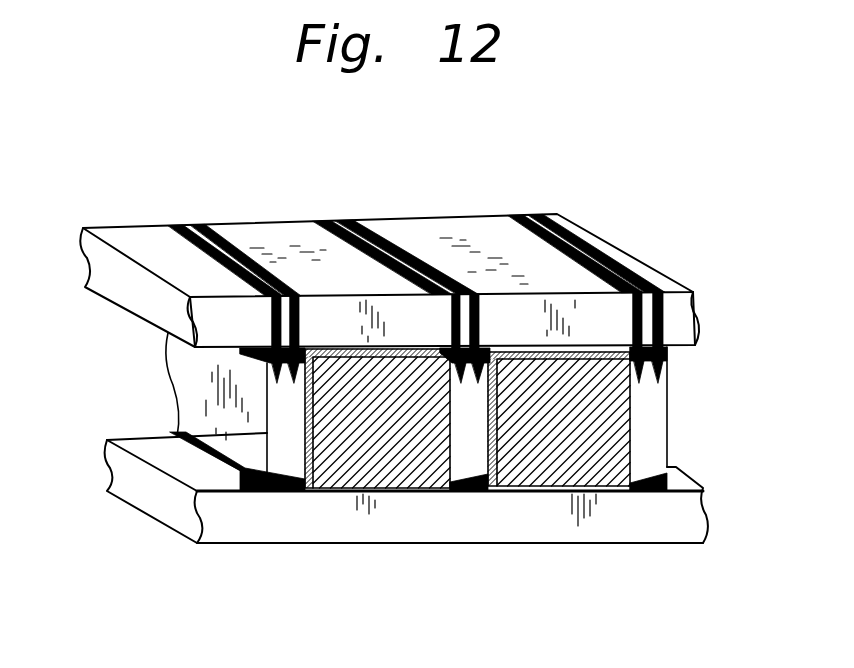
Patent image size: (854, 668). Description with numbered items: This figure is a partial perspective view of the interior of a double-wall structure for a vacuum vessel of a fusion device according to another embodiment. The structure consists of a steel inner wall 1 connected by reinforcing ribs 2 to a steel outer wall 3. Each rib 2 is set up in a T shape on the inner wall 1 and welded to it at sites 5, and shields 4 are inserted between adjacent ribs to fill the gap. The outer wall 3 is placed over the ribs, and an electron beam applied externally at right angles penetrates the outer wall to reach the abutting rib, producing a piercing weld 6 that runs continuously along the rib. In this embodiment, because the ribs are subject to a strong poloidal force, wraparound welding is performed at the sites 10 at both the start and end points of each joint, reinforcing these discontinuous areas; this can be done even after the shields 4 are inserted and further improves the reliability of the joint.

The inner wall 1 is at (170, 495).
The reinforcing rib 2 is at (210, 393).
The outer wall 3 is at (278, 237).
The shield 4 is at (542, 448).
The welding site 5 is at (290, 497).
The piercing weld 6 is at (418, 262).
The wraparound welding site 10 is at (673, 352).